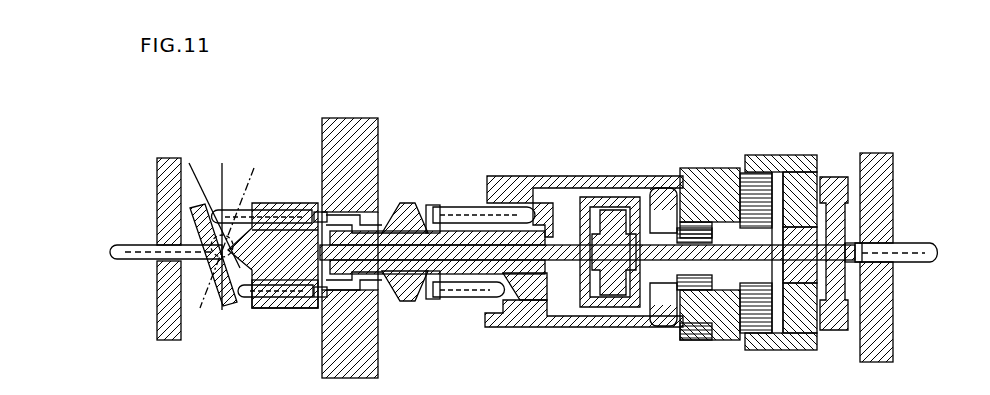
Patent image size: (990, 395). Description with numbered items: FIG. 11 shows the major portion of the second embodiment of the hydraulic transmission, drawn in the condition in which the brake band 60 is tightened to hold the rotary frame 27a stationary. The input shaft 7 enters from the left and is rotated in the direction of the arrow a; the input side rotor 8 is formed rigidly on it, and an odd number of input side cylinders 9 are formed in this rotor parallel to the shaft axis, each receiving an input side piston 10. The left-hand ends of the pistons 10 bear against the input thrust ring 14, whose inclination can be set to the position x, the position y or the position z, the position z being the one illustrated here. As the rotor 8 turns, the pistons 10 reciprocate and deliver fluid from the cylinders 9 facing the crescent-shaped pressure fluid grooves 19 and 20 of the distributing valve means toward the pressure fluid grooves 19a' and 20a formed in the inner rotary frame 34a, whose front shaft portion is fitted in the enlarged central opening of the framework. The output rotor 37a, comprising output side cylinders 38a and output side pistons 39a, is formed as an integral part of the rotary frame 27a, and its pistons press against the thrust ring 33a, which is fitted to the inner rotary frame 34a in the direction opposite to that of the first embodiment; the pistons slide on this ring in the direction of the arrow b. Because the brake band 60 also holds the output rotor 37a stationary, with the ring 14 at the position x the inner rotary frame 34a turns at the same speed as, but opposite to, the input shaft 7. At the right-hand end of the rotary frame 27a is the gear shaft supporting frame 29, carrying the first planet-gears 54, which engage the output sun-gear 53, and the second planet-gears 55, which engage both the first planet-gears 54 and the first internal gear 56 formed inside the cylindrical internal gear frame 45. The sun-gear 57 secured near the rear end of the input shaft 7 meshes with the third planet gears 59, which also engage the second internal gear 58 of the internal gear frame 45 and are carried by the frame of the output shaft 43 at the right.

The input shaft 7 is at (125, 262).
The arrow a is at (140, 244).
The input side rotor 8 is at (283, 203).
The input side cylinders 9 is at (272, 308).
The input side pistons 10 is at (242, 298).
The input thrust ring 14 is at (213, 308).
The position x is at (211, 205).
The position y is at (219, 226).
The position z is at (229, 225).
The pressure fluid groove 19 is at (322, 190).
The pressure fluid groove 20 is at (322, 298).
The pressure fluid groove 19a' is at (435, 181).
The pressure fluid groove 20a is at (420, 301).
The output rotor 37a is at (468, 207).
The output side cylinders 38a is at (435, 205).
The output side pistons 39a is at (487, 200).
The brake band 60 is at (545, 203).
The thrust ring 33a is at (522, 292).
The inner rotary frame 34a is at (597, 212).
The rotary frame 27a is at (615, 176).
The gear shaft supporting frame 29 is at (665, 200).
The arrow b is at (690, 265).
The output sun-gear 53 is at (693, 290).
The first planet-gears 54 is at (700, 340).
The second planet-gears 55 is at (756, 195).
The first internal gear 56 is at (752, 158).
The second internal gear 58 is at (808, 175).
The third planet gears 59 is at (840, 240).
The internal gear frame 45 is at (852, 255).
The output shaft 43 is at (922, 252).
The sun-gear 57 is at (878, 200).